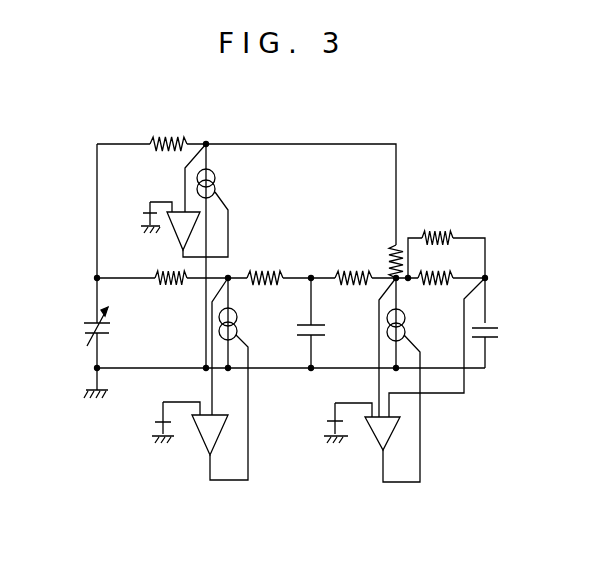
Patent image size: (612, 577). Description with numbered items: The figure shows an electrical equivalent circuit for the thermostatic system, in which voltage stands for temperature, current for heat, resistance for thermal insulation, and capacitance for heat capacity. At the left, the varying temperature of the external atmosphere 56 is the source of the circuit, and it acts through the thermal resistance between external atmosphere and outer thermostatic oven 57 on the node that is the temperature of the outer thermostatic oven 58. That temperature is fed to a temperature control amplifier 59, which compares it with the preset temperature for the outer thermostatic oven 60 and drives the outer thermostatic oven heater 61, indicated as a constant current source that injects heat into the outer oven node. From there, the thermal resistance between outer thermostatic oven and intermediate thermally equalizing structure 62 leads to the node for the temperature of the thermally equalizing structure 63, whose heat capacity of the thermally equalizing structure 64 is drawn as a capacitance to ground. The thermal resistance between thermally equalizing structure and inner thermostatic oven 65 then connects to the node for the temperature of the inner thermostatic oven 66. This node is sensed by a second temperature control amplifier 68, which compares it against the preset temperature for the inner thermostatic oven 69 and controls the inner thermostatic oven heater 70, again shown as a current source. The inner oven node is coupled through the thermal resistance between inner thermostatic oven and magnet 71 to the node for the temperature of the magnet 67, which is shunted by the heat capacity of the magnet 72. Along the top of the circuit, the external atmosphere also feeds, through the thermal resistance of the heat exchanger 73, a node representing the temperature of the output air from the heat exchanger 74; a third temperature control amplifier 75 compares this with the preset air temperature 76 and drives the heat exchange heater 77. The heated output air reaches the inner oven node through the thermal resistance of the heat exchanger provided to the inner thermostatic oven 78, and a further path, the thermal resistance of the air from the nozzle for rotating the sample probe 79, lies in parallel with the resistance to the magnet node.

The varying temperature of external atmosphere 56 is at (90, 322).
The thermal resistance between external atmosphere and outer thermostatic oven 57 is at (166, 288).
The temperature of the outer thermostatic oven 58 is at (229, 277).
The temperature control amplifier 59 is at (206, 442).
The preset temperature for the outer thermostatic oven 60 is at (158, 418).
The outer thermostatic oven heater 61 is at (238, 322).
The thermal resistance between outer thermostatic oven and intermediate thermally eq 62 is at (268, 272).
The temperature of the thermally equalizing structure 63 is at (308, 283).
The heat capacity of the thermally equalizing structure 64 is at (318, 326).
The thermal resistance between thermally equalizing structure and inner thermostatic 65 is at (364, 273).
The temperature of the inner thermostatic oven 66 is at (400, 286).
The temperature of the magnet 67 is at (489, 282).
The temperature control amplifier 68 is at (379, 437).
The preset temperature for the inner thermostatic oven 69 is at (326, 420).
The inner thermostatic oven heater 70 is at (408, 330).
The thermal resistance between inner thermostatic oven and magnet 71 is at (433, 272).
The heat capacity of the magnet 72 is at (496, 332).
The thermal resistance of the heat exchanger 73 is at (170, 134).
The temperature of the output air from the heat exchanger 74 is at (208, 143).
The temperature control amplifier 75 is at (178, 243).
The preset air temperature 76 is at (146, 212).
The heat exchange heater 77 is at (216, 186).
The thermal resistance of the heat exchanger provided to the inner thermostatic oven 78 is at (389, 262).
The thermal resistance of the air from the nozzle for rotating the sample probe 79 is at (437, 233).